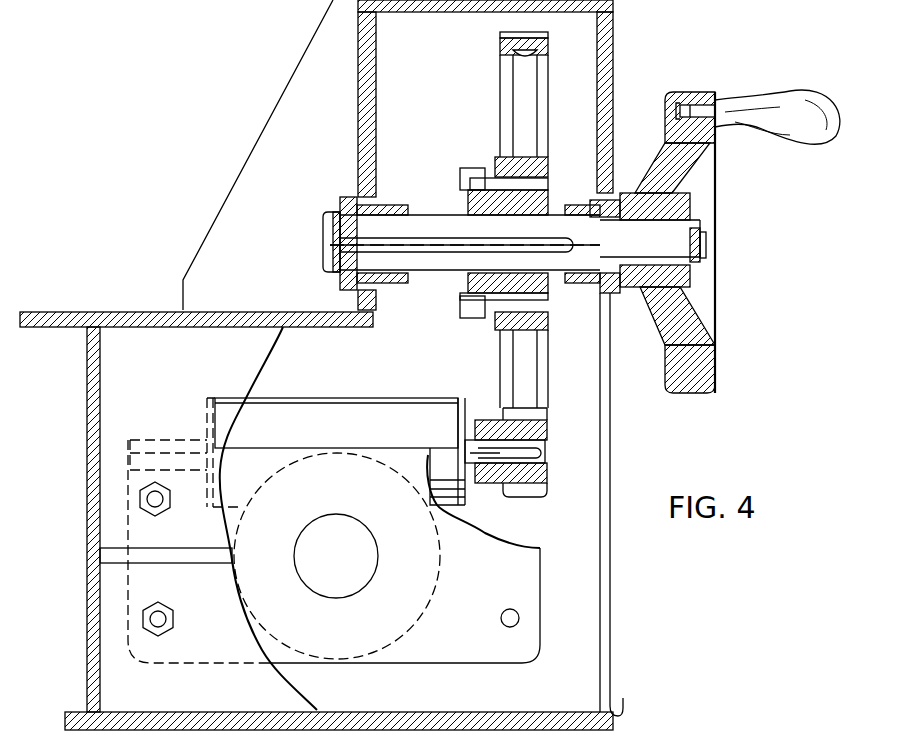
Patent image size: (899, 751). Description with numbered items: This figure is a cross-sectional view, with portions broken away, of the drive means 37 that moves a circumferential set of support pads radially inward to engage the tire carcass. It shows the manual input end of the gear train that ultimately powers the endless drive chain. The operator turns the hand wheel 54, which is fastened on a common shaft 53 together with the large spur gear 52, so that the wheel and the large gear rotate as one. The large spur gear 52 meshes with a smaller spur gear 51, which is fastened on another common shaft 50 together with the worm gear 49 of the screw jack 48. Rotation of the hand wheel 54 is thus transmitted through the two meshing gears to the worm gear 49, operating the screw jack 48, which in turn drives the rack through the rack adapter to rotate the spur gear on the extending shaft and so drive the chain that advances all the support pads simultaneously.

The drive means 37 is at (724, 342).
The screw jack 48 is at (330, 587).
The worm gear 49 is at (343, 428).
The common shaft 50 is at (478, 445).
The spur gear 51 is at (538, 477).
The large spur gear 52 is at (543, 371).
The common shaft 53 is at (430, 230).
The hand wheel 54 is at (808, 98).